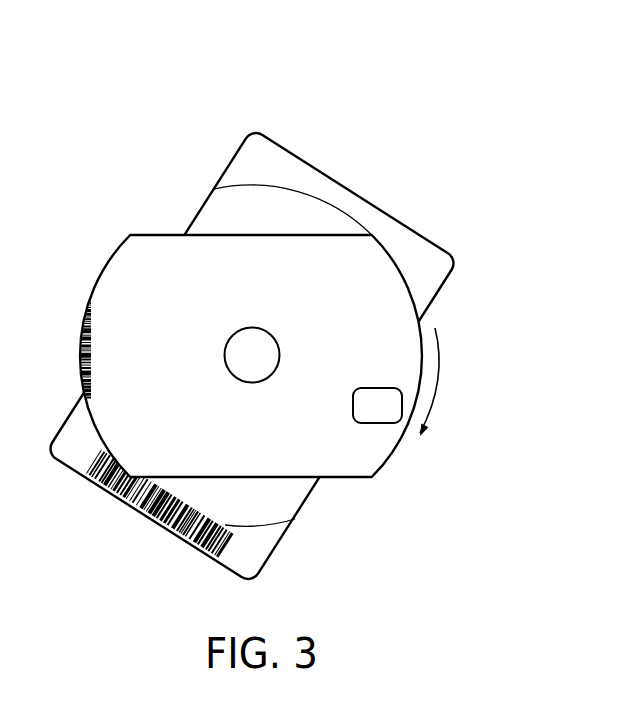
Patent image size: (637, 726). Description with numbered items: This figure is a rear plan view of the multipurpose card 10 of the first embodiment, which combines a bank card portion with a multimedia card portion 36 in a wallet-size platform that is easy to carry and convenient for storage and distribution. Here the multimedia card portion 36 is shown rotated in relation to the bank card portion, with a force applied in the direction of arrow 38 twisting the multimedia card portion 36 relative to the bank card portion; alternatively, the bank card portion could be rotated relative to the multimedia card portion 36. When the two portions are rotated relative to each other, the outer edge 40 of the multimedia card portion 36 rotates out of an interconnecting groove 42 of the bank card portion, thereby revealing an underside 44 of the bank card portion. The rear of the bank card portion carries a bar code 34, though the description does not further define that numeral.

The multipurpose card 10 is at (245, 367).
The bar code on card 34 is at (73, 447).
The multimedia card portion 36 is at (235, 397).
The arrow 38 is at (442, 360).
The outer edge 40 is at (118, 245).
The interconnecting groove 42 is at (219, 194).
The underside 44 is at (253, 495).